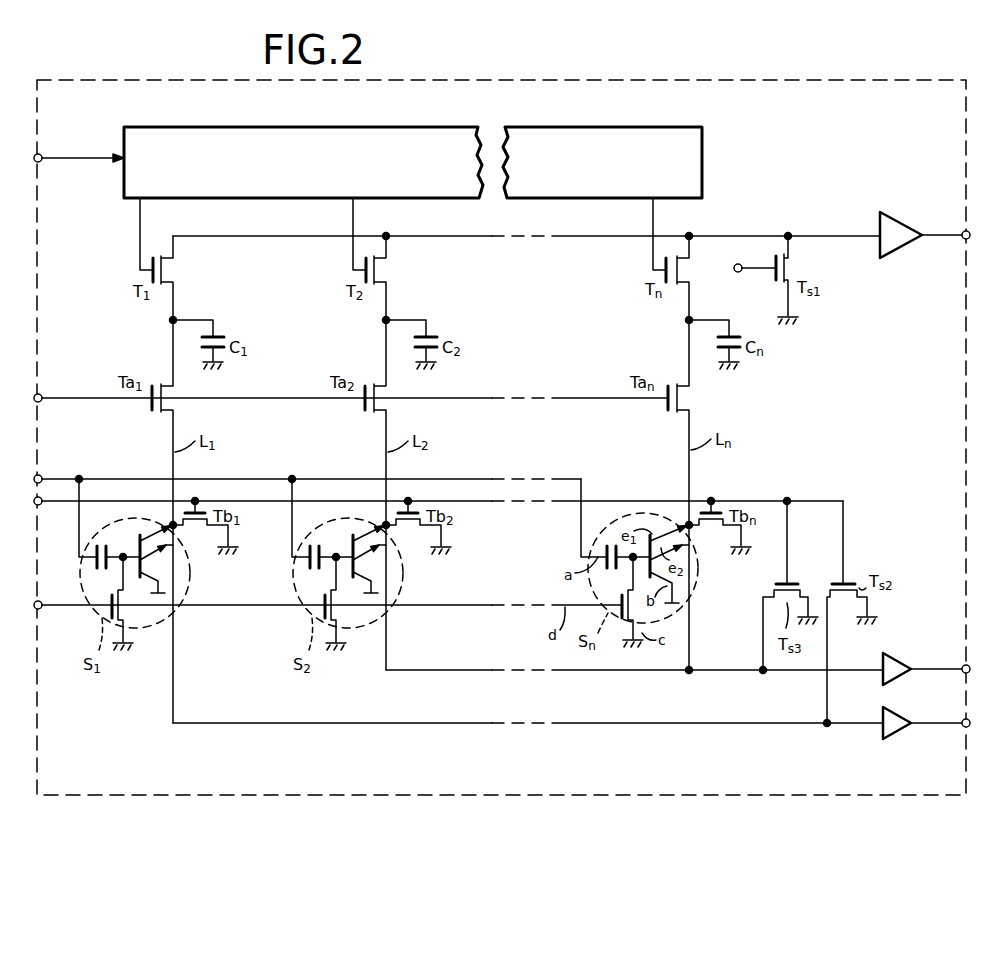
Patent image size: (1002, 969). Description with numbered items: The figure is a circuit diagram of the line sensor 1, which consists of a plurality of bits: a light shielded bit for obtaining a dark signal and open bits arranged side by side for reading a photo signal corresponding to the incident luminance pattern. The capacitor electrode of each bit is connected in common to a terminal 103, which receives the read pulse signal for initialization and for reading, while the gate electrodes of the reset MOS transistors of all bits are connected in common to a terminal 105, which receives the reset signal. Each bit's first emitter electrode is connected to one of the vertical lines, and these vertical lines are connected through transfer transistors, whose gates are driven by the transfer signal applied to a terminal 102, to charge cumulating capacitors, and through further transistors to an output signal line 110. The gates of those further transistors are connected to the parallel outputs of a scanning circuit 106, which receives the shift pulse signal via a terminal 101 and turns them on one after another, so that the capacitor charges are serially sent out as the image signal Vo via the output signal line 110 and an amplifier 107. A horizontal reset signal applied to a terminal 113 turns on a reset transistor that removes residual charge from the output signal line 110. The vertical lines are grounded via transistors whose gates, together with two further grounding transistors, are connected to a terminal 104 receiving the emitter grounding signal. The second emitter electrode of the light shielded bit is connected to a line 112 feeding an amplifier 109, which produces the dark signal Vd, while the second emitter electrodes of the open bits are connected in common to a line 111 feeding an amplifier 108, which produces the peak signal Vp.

The line sensor 1 is at (906, 78).
The terminal 101 is at (42, 154).
The terminal 102 is at (42, 394).
The terminal 103 is at (42, 475).
The terminal 104 is at (42, 505).
The terminal 105 is at (42, 610).
The scanning circuit 106 is at (435, 127).
The amplifier 107 is at (902, 222).
The amplifier 108 is at (903, 661).
The amplifier 109 is at (903, 734).
The output signal line 110 is at (762, 234).
The line 111 is at (638, 673).
The line 112 is at (706, 726).
The terminal 113 is at (735, 265).